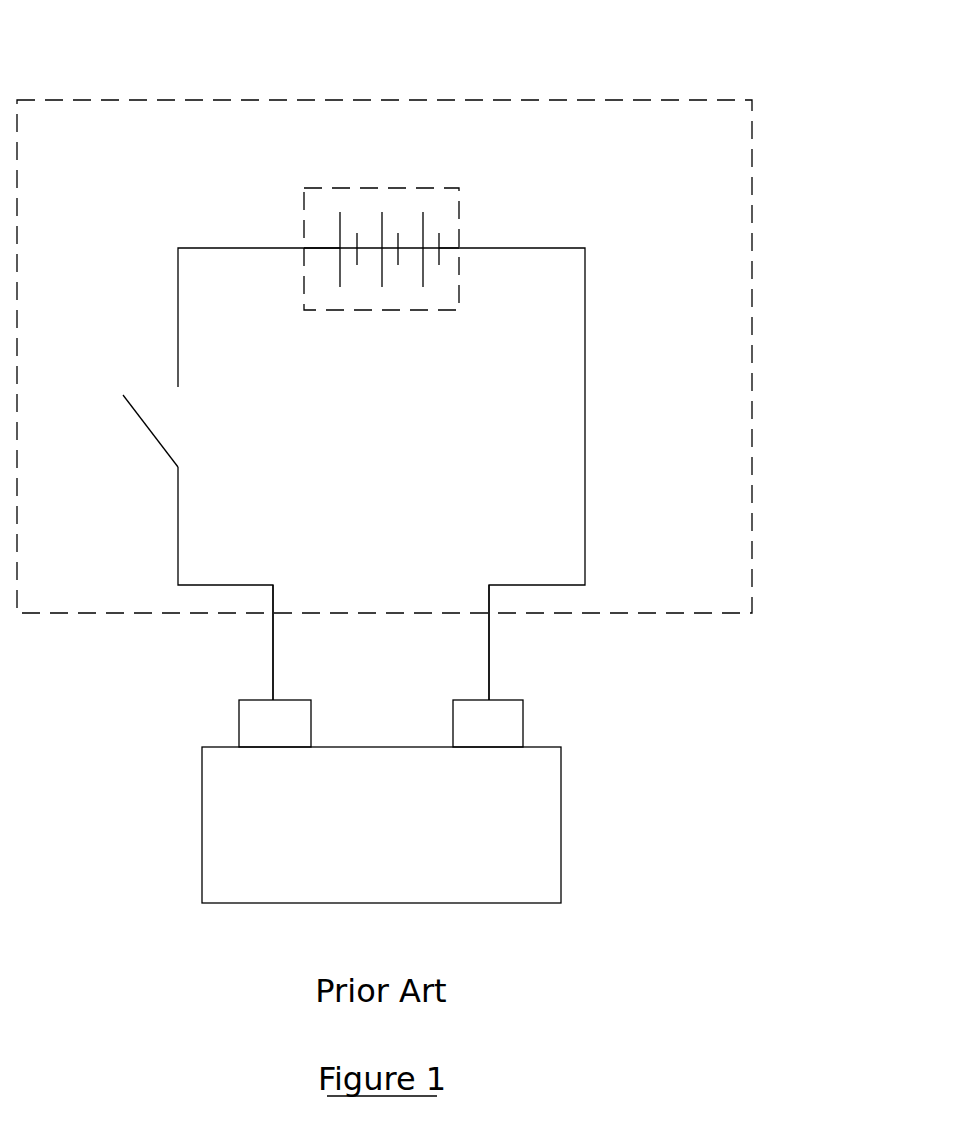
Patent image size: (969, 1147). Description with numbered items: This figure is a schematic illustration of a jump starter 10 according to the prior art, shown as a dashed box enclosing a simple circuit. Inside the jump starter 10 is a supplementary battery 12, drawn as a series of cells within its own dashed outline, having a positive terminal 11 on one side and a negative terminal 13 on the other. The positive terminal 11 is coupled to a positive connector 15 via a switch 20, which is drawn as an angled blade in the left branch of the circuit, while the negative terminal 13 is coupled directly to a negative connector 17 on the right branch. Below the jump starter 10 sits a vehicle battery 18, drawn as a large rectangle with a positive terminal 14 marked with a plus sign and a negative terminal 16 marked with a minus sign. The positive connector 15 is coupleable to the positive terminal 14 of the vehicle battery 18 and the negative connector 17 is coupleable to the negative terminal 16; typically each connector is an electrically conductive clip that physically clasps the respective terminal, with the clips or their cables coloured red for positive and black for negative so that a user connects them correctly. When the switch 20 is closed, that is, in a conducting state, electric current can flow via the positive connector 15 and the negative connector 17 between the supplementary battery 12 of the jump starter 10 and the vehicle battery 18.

The jump starter 10 is at (580, 100).
The positive terminal 11 is at (304, 248).
The supplementary battery 12 is at (459, 188).
The negative terminal 13 is at (459, 248).
The positive terminal 14 is at (239, 724).
The positive connector 15 is at (273, 650).
The negative terminal 16 is at (523, 725).
The negative connector 17 is at (489, 650).
The vehicle battery 18 is at (381, 825).
The switch 20 is at (143, 425).